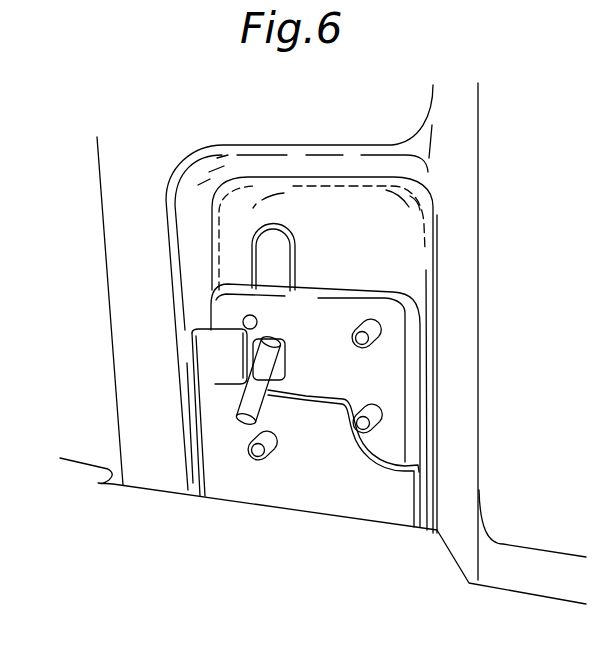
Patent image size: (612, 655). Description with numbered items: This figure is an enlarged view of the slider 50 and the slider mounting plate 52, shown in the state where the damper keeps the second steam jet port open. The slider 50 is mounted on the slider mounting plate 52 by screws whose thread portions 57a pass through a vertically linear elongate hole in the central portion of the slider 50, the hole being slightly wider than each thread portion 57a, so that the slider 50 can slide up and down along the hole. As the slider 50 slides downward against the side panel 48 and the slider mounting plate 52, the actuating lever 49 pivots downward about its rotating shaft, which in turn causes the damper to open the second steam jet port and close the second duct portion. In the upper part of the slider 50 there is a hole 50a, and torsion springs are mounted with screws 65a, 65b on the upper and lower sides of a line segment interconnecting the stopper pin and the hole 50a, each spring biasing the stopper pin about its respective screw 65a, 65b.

The side panel 48 is at (109, 217).
The actuating lever 49 is at (247, 400).
The slider 50 is at (320, 298).
The hole 50a is at (292, 378).
The slider mounting plate 52 is at (235, 496).
The thread portion 57a is at (277, 461).
The screw 65a is at (374, 326).
The screw 65b is at (364, 443).